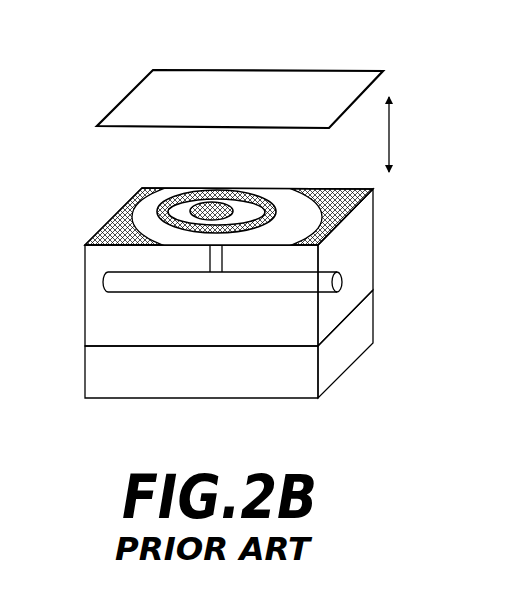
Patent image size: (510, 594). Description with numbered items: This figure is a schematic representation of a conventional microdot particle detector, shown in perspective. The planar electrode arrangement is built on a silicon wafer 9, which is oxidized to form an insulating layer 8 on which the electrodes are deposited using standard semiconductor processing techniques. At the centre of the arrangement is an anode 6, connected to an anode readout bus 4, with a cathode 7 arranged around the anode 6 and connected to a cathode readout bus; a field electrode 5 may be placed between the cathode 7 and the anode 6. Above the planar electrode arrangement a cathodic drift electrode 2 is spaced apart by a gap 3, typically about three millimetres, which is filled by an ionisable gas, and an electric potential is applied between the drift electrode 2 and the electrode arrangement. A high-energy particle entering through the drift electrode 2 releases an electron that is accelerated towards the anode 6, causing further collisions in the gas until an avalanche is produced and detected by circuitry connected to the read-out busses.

The cathodic drift electrode 2 is at (233, 85).
The gap 3 is at (390, 139).
The anode readout bus 4 is at (105, 283).
The field electrode 5 is at (143, 208).
The anode 6 is at (207, 212).
The cathode 7 is at (97, 235).
The insulating layer 8 is at (358, 262).
The silicon wafer 9 is at (358, 335).